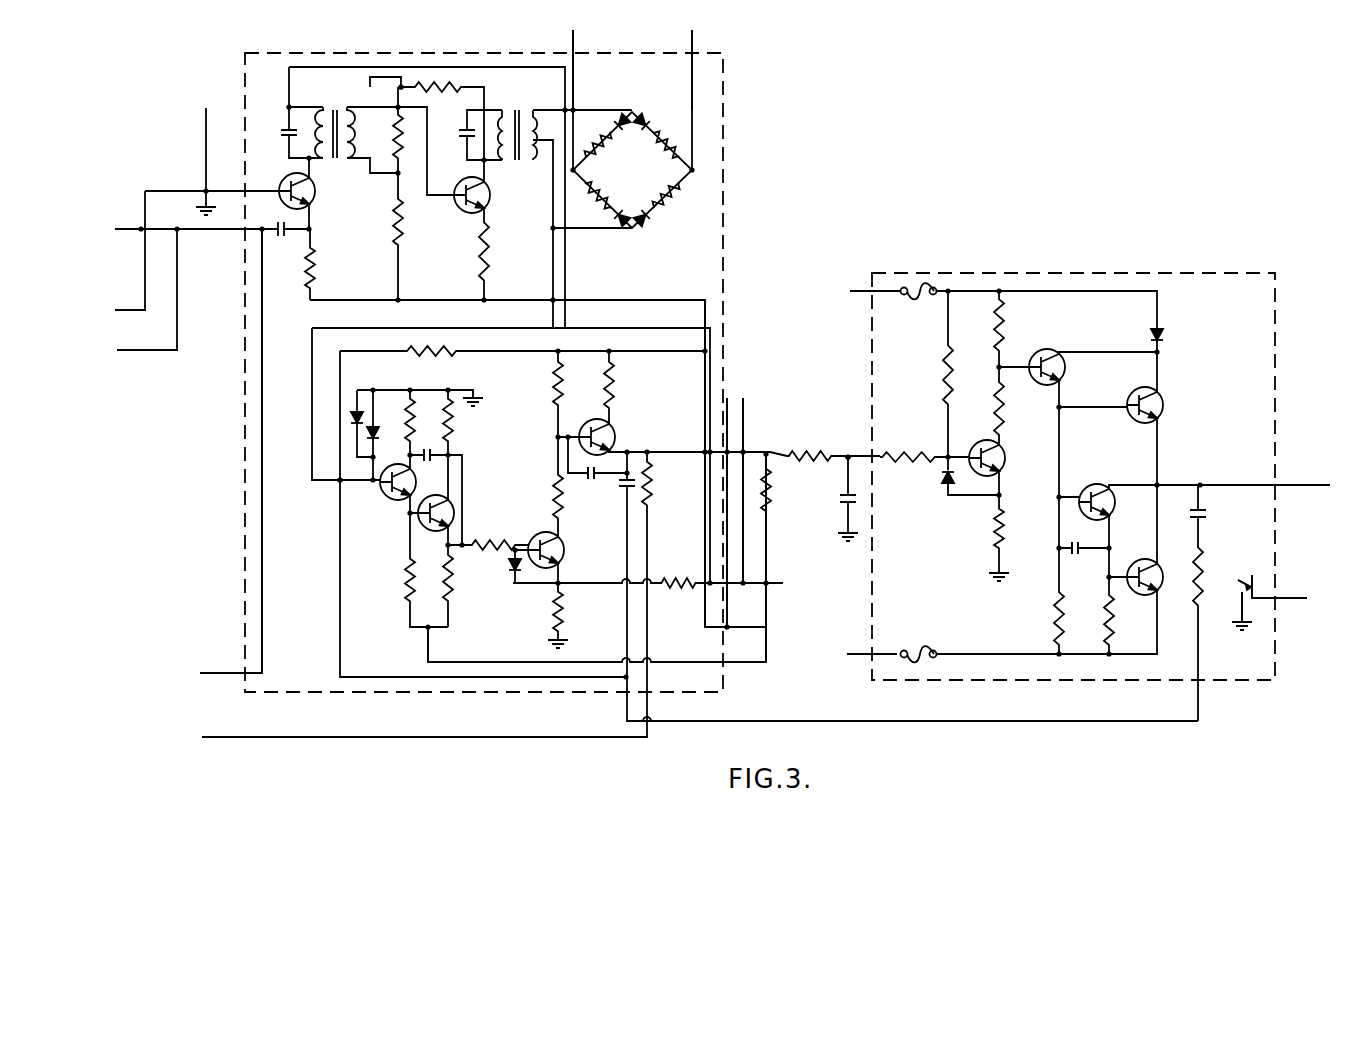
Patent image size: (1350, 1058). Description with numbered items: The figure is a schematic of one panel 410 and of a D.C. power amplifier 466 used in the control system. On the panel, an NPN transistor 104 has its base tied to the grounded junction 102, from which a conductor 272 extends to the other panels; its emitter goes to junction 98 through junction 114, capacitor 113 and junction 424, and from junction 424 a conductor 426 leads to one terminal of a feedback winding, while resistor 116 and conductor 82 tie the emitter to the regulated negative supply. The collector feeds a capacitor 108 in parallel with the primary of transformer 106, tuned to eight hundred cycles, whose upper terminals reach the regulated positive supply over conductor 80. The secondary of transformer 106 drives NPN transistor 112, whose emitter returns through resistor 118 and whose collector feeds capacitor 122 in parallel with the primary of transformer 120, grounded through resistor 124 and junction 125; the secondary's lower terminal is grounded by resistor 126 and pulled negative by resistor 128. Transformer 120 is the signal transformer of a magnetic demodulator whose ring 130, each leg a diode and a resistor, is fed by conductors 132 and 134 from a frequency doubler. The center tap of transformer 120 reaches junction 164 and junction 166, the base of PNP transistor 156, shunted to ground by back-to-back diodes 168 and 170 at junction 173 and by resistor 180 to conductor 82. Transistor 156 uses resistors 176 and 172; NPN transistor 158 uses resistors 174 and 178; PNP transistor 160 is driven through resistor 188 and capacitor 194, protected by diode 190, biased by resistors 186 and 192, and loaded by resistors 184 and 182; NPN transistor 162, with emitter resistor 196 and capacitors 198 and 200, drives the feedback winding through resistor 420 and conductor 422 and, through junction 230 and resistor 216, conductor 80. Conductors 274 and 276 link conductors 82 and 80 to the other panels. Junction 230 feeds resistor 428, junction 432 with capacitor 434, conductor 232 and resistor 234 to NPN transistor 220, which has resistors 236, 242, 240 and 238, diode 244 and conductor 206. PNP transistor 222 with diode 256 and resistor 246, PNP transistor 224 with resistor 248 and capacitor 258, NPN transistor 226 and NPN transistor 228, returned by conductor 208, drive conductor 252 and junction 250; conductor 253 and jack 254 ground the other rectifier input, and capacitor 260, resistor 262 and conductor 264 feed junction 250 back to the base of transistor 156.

The conductor 80 is at (431, 648).
The conductor 82 is at (704, 398).
The junction 98 is at (179, 232).
The junction 102 is at (205, 188).
The NPN transistor 104 is at (313, 198).
The transformer 106 is at (334, 108).
The capacitor 108 is at (286, 130).
The NPN transistor 112 is at (490, 198).
The capacitor 113 is at (280, 238).
The junction 114 is at (311, 230).
The resistor 116 is at (313, 266).
The resistor 118 is at (489, 252).
The transformer 120 is at (518, 108).
The capacitor 122 is at (463, 140).
The resistor 124 is at (455, 84).
The junction 125 is at (401, 85).
The resistor 126 is at (393, 132).
The resistor 128 is at (403, 224).
The ring 130 is at (632, 182).
The conductor 132 is at (574, 46).
The conductor 134 is at (693, 46).
The PNP transistor 156 is at (388, 500).
The NPN transistor 158 is at (456, 508).
The PNP transistor 160 is at (564, 556).
The NPN transistor 162 is at (614, 425).
The junction 164 is at (338, 483).
The junction 166 is at (372, 482).
The diode 168 is at (357, 408).
The diode 170 is at (374, 426).
The resistor 172 is at (414, 400).
The junction 173 is at (473, 388).
The resistor 174 is at (452, 426).
The resistor 176 is at (405, 568).
The resistor 178 is at (452, 588).
The resistor 180 is at (412, 348).
The resistor 182 is at (553, 384).
The resistor 184 is at (563, 500).
The resistor 186 is at (553, 612).
The resistor 188 is at (490, 540).
The diode 190 is at (510, 566).
The resistor 192 is at (668, 580).
The capacitor 194 is at (436, 452).
The resistor 196 is at (613, 384).
The capacitor 198 is at (596, 476).
The capacitor 200 is at (622, 490).
The conductor 206 is at (857, 288).
The conductor 208 is at (856, 656).
The resistor 216 is at (770, 498).
The NPN transistor 220 is at (1006, 466).
The PNP transistor 222 is at (1052, 350).
The PNP transistor 224 is at (1097, 484).
The NPN transistor 226 is at (1162, 398).
The NPN transistor 228 is at (1140, 560).
The junction 230 is at (767, 452).
The conductor 232 is at (862, 455).
The resistor 234 is at (898, 455).
The resistor 236 is at (942, 365).
The resistor 238 is at (1005, 322).
The resistor 240 is at (1005, 412).
The resistor 242 is at (993, 528).
The diode 244 is at (942, 480).
The resistor 246 is at (1052, 607).
The resistor 248 is at (1104, 604).
The junction 250 is at (1160, 484).
The conductor 252 is at (1288, 485).
The conductor 253 is at (1290, 598).
The jack 254 is at (1242, 590).
The diode 256 is at (1165, 330).
The capacitor 258 is at (1073, 555).
The capacitor 260 is at (1208, 512).
The resistor 262 is at (1204, 572).
The conductor 264 is at (944, 724).
The conductor 272 is at (206, 122).
The conductor 274 is at (727, 398).
The conductor 276 is at (743, 398).
The panel 410 is at (725, 138).
The resistor 420 is at (652, 492).
The conductor 422 is at (214, 740).
The junction 424 is at (260, 235).
The conductor 426 is at (208, 672).
The resistor 428 is at (806, 452).
The junction 432 is at (848, 454).
The capacitor 434 is at (845, 505).
The D.C. power amplifier 466 is at (1120, 274).